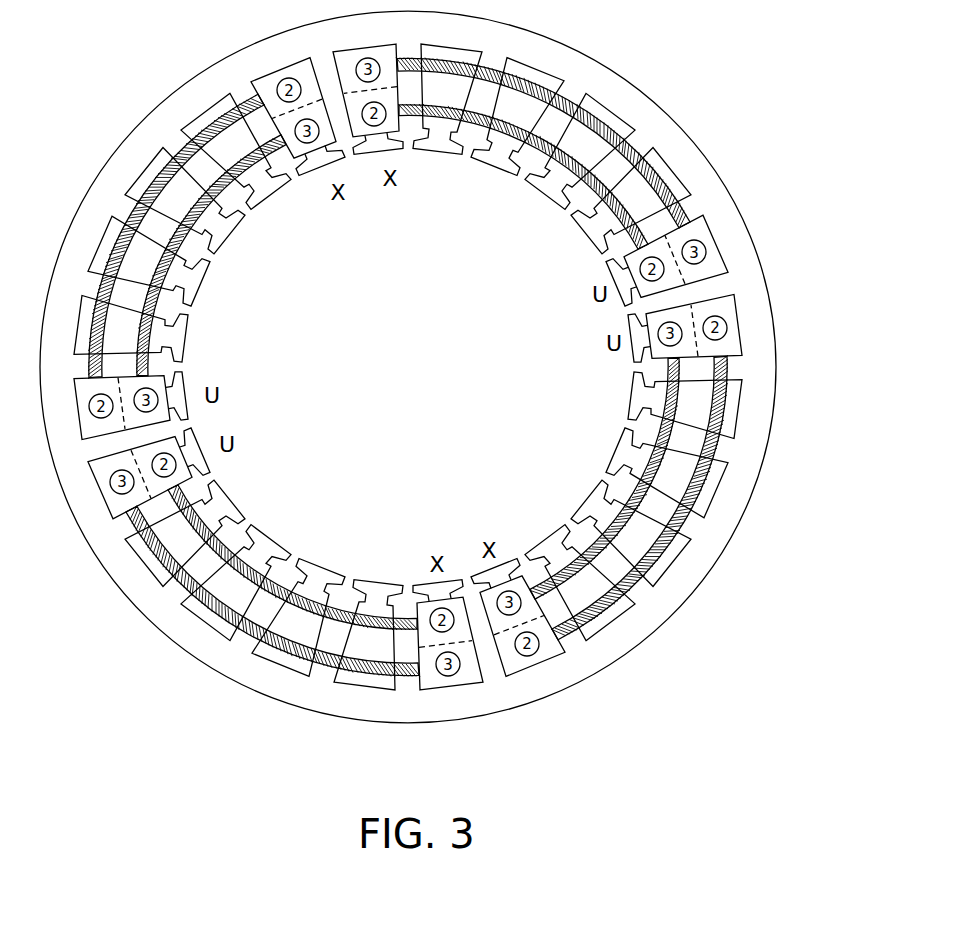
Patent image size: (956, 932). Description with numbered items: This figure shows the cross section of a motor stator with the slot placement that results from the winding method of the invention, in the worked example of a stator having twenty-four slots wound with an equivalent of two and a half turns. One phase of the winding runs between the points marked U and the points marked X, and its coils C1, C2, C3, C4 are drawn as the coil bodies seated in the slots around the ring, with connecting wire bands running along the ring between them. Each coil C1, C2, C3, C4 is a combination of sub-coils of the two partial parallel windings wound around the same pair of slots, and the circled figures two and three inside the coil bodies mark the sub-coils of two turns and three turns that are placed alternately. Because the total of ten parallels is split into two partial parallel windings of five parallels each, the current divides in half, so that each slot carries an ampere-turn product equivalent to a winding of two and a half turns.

The coil C1 is at (690, 496).
The coil C2 is at (226, 640).
The coil C3 is at (160, 200).
The coil C4 is at (532, 137).